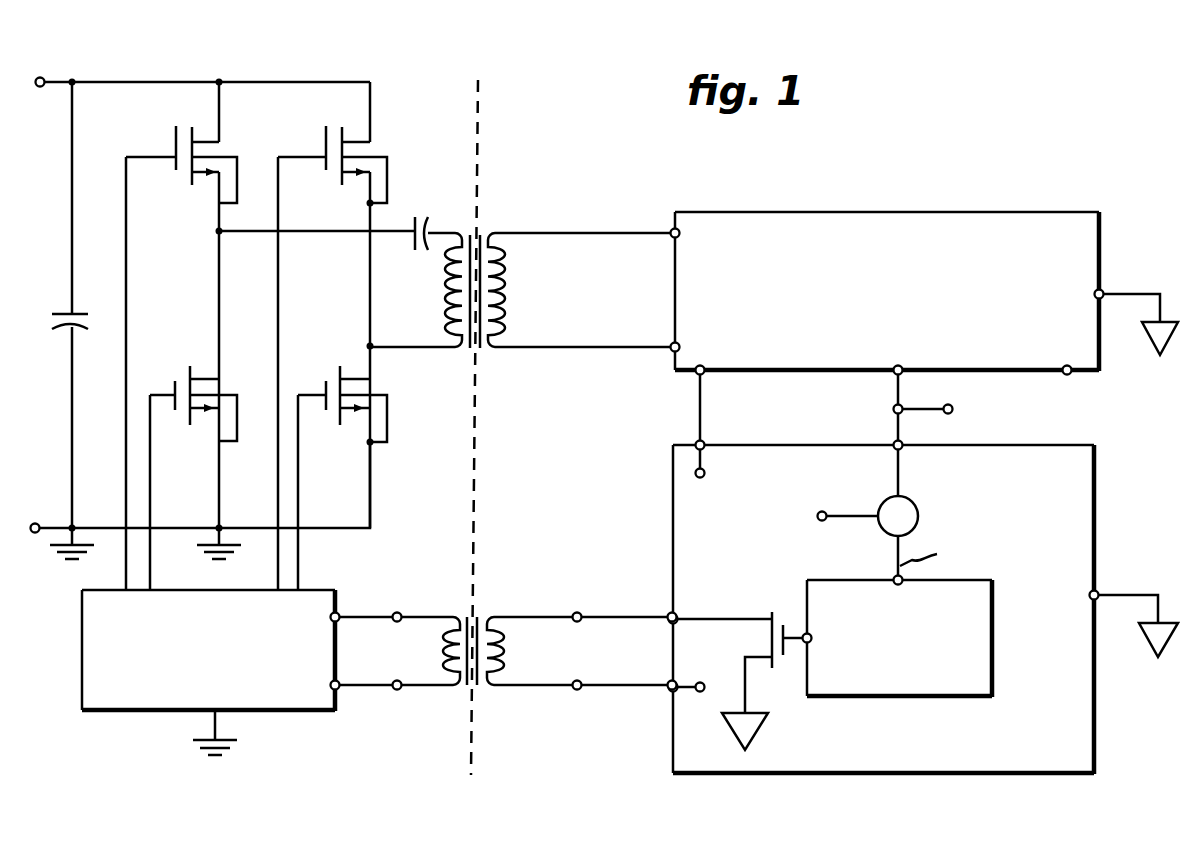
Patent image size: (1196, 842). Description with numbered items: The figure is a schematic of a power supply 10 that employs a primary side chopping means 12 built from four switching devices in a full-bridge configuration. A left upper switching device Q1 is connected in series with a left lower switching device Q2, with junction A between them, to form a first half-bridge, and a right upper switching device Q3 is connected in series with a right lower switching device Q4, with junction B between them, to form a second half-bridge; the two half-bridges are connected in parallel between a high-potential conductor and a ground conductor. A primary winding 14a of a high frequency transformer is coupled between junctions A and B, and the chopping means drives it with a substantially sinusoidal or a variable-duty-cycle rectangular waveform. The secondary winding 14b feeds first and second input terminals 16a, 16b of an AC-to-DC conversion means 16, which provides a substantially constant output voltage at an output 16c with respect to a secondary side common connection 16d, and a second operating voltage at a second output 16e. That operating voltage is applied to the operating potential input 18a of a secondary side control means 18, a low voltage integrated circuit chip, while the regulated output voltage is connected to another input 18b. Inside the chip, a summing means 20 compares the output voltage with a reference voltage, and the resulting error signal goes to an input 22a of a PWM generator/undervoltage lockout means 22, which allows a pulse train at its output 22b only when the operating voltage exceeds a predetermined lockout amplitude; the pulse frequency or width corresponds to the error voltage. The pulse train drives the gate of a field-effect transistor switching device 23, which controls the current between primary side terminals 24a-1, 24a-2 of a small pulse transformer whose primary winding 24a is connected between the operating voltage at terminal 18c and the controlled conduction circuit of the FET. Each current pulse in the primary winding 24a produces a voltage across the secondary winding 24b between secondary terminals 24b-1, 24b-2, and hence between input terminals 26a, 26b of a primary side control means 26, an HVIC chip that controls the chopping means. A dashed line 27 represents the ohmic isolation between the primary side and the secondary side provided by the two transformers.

The power supply 10 is at (430, 57).
The primary side chopping means 12 is at (153, 67).
The left upper switching device Q1 is at (174, 150).
The left lower switching device Q2 is at (174, 394).
The right upper switching device Q3 is at (325, 150).
The right lower switching device Q4 is at (324, 394).
The primary winding 14a is at (460, 232).
The secondary winding 14b is at (494, 233).
The AC-to-DC conversion means 16 is at (1045, 309).
The first input terminal 16a is at (671, 238).
The second input terminal 16b is at (671, 345).
The output 16c is at (895, 374).
The secondary side common connection 16d is at (1096, 292).
The second output 16e is at (702, 373).
The secondary side control means 18 is at (728, 565).
The operating potential input 18a is at (712, 443).
The input 18b is at (900, 448).
The terminal 18c is at (678, 691).
The summing means 20 is at (883, 525).
The PWM generator/undervoltage lockout means 22 is at (967, 674).
The input 22a is at (895, 577).
The output 22b is at (800, 635).
The field-effect transistor switching device 23 is at (786, 652).
The primary winding 24a is at (505, 650).
The primary side terminal 24a-1 is at (577, 612).
The primary side terminal 24a-2 is at (577, 690).
The secondary winding 24b is at (440, 650).
The secondary terminal 24b-1 is at (400, 612).
The secondary terminal 24b-2 is at (397, 690).
The primary side control means 26 is at (127, 670).
The input terminal 26a is at (339, 613).
The input terminal 26b is at (339, 689).
The dashed line 27 is at (475, 467).